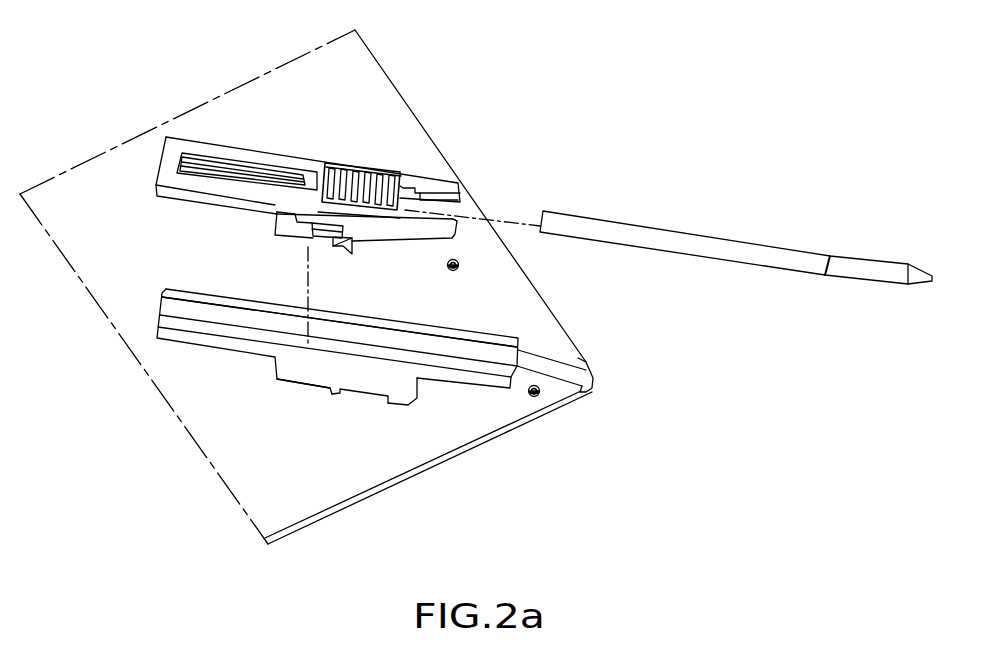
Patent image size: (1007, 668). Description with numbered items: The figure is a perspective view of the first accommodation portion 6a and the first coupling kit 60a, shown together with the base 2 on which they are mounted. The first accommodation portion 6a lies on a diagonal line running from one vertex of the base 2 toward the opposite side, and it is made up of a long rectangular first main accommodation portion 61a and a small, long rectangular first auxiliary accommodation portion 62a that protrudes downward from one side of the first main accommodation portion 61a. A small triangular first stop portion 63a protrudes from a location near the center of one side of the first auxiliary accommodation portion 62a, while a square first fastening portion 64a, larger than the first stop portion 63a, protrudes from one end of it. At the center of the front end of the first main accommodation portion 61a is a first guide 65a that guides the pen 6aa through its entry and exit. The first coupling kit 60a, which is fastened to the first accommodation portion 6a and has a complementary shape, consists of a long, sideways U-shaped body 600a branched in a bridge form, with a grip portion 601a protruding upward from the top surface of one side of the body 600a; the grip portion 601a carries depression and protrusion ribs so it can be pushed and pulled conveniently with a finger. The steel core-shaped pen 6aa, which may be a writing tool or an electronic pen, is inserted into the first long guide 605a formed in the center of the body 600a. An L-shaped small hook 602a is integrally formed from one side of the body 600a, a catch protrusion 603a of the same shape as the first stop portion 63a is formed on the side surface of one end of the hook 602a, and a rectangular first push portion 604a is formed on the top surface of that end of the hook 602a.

The base 2 is at (110, 167).
The first coupling kit 60a is at (348, 211).
The body 600a is at (236, 151).
The first long guide 605a is at (285, 183).
The grip portion 601a is at (362, 172).
The hook 602a is at (296, 240).
The catch protrusion 603a is at (334, 240).
The first push portion 604a is at (352, 246).
The pen 6aa is at (672, 239).
The first accommodation portion 6a is at (376, 357).
The first main accommodation portion 61a is at (453, 344).
The first auxiliary accommodation portion 62a is at (292, 381).
The first stop portion 63a is at (340, 394).
The first fastening portion 64a is at (412, 397).
The first guide 65a is at (578, 356).